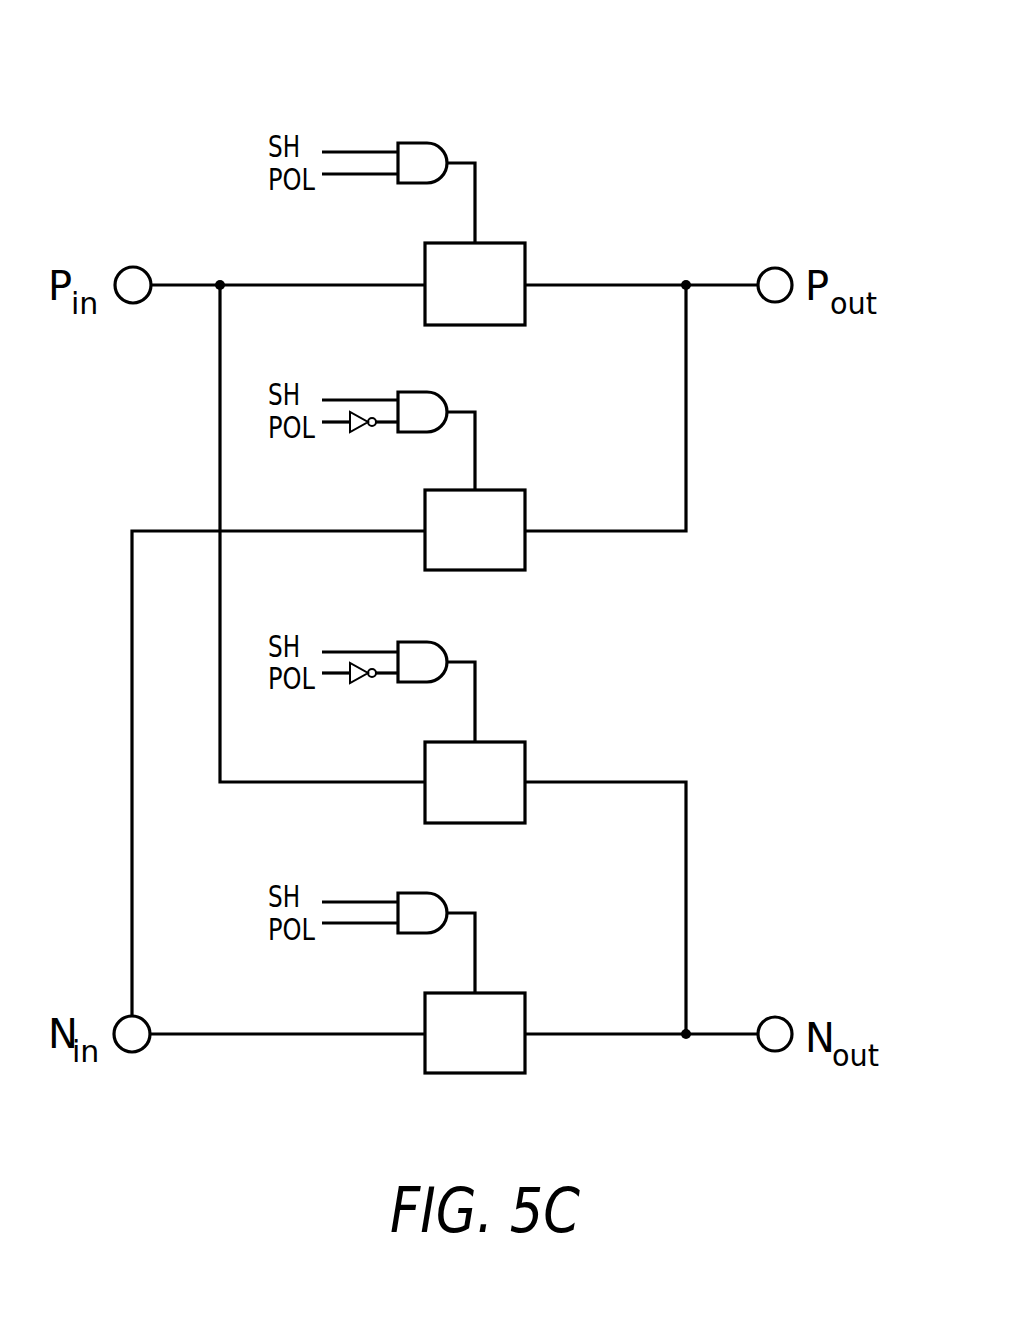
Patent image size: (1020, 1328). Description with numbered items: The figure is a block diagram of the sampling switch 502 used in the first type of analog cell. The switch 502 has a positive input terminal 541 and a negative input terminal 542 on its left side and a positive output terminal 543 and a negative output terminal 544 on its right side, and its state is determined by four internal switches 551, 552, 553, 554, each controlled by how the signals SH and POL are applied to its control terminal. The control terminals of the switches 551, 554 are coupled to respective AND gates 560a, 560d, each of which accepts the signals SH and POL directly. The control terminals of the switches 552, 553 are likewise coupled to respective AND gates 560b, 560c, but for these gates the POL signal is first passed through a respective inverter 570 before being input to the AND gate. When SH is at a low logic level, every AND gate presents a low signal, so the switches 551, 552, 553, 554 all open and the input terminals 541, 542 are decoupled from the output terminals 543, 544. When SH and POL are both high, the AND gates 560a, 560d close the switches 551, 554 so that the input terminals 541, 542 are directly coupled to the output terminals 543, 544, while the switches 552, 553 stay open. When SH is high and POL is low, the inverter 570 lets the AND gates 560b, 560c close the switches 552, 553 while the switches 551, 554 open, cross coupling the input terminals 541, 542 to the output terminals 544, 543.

The switch 502 is at (320, 86).
The P input terminal 541 is at (135, 267).
The N input terminal 542 is at (132, 1053).
The P output terminal 543 is at (778, 268).
The N output terminal 544 is at (778, 1016).
The switch 551 is at (505, 301).
The switch 552 is at (505, 548).
The switch 553 is at (505, 800).
The switch 554 is at (505, 1051).
The AND gate 560a is at (426, 143).
The AND gate 560b is at (426, 392).
The AND gate 560c is at (426, 642).
The AND gate 560d is at (426, 893).
The inverter 570 is at (364, 432).